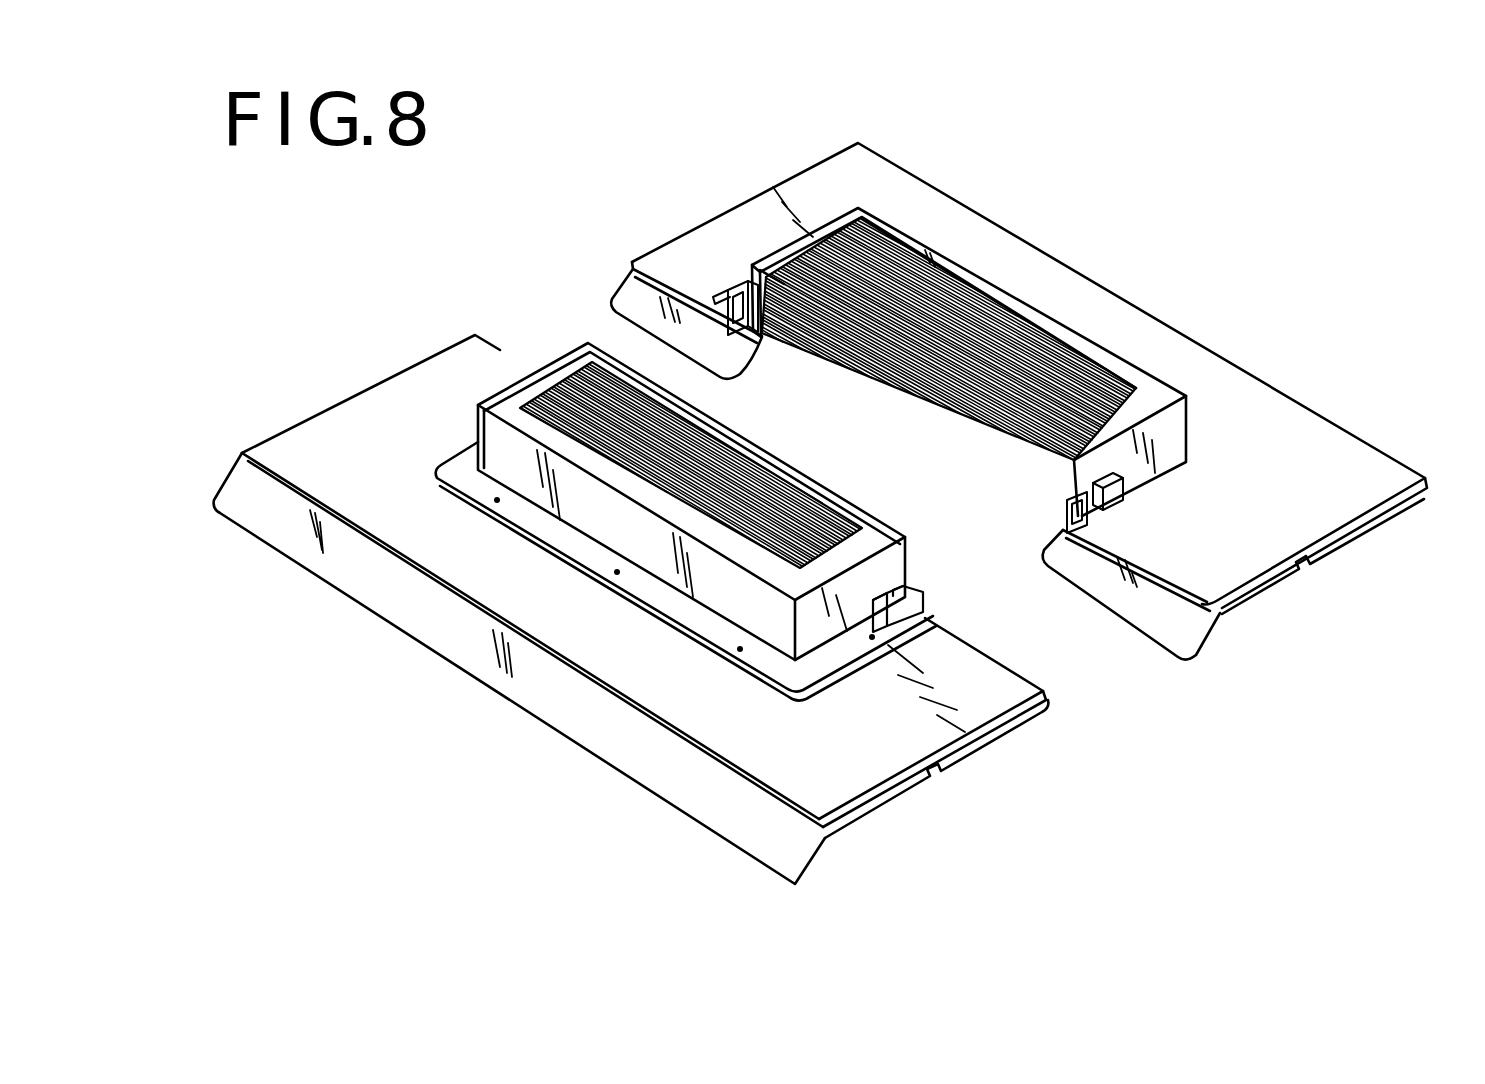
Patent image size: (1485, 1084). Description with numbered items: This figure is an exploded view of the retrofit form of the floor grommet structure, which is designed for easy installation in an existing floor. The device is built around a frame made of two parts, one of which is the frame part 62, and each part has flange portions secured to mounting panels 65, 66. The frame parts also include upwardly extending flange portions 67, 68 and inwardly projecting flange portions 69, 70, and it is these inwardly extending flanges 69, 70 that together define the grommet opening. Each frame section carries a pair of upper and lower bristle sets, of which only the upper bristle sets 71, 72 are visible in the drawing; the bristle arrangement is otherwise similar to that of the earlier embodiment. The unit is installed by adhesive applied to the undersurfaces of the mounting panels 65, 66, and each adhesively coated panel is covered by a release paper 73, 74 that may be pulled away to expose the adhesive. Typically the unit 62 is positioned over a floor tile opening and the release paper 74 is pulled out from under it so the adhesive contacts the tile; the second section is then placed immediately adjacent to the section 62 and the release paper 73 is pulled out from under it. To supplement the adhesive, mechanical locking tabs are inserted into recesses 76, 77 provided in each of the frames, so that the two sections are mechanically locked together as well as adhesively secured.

The frame part 62 is at (983, 258).
The mounting panel 65 is at (880, 752).
The mounting panel 66 is at (1328, 490).
The upwardly extending flange portion 67 is at (727, 506).
The upwardly extending flange portion 68 is at (1016, 335).
The inwardly projecting flange portion 69 is at (558, 370).
The inwardly projecting flange portion 70 is at (838, 233).
The upper bristle set 71 is at (737, 437).
The upper bristle set 72 is at (883, 383).
The release paper 73 is at (612, 725).
The release paper 74 is at (643, 305).
The recess 76 is at (926, 602).
The recess 77 is at (1063, 505).